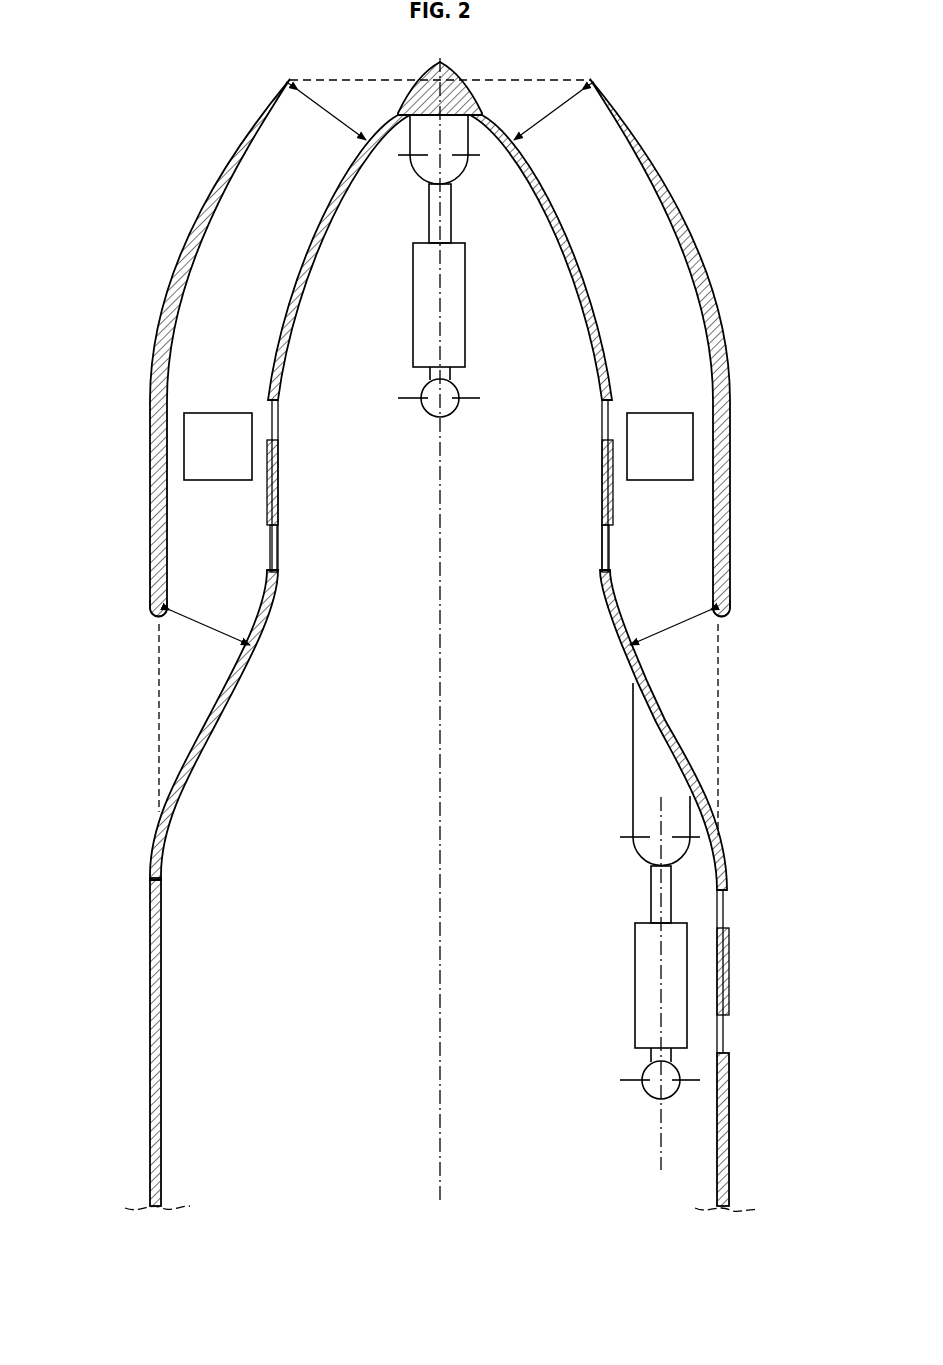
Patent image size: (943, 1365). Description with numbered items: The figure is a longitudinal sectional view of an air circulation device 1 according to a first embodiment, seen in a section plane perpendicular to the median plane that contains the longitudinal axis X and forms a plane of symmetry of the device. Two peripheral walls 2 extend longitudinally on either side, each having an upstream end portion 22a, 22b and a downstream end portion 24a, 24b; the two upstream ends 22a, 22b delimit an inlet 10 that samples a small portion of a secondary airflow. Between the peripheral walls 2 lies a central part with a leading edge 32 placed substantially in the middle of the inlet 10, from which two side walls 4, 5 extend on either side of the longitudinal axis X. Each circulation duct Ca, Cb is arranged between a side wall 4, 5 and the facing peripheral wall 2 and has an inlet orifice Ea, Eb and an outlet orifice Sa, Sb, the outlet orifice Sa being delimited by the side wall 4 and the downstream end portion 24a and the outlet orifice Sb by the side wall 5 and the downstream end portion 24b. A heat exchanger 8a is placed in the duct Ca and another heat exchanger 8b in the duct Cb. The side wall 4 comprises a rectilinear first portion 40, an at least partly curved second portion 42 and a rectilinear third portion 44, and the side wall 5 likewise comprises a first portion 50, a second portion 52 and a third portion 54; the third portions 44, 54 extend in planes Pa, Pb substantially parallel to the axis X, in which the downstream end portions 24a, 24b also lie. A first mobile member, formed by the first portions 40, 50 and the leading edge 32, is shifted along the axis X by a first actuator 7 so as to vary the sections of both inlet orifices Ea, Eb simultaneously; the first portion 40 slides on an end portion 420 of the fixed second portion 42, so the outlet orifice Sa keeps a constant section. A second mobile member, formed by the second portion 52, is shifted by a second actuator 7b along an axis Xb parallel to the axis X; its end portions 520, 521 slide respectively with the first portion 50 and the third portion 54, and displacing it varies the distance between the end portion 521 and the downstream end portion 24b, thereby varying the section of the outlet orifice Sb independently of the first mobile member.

The air circulation device 1 is at (454, 332).
The peripheral wall 2 is at (190, 237).
The side wall 4 is at (333, 222).
The side wall 5 is at (538, 222).
The first actuator 7 is at (410, 313).
The second actuator 7b is at (632, 992).
The heat exchanger 8a is at (218, 446).
The heat exchanger 8b is at (660, 446).
The inlet 10 is at (514, 80).
The upstream end portion 22a is at (290, 78).
The upstream end portion 22b is at (590, 78).
The downstream end portion 24a is at (158, 618).
The downstream end portion 24b is at (718, 618).
The leading edge 32 is at (418, 94).
The first portion 40 is at (279, 487).
The second portion 42 is at (256, 655).
The third portion 44 is at (161, 969).
The first portion 50 is at (600, 487).
The second portion 52 is at (618, 655).
The third portion 54 is at (729, 1161).
The end portion 420 is at (278, 549).
The end portion 520 is at (602, 549).
The end portion 521 is at (724, 907).
The longitudinal axis X is at (444, 514).
The axis Xb is at (658, 1151).
The circulation duct Ca is at (244, 249).
The circulation duct Cb is at (627, 249).
The inlet orifice Ea is at (332, 115).
The inlet orifice Eb is at (548, 115).
The outlet orifice Sa is at (210, 623).
The outlet orifice Sb is at (670, 623).
The second plane Pa is at (158, 706).
The second plane Pb is at (720, 706).